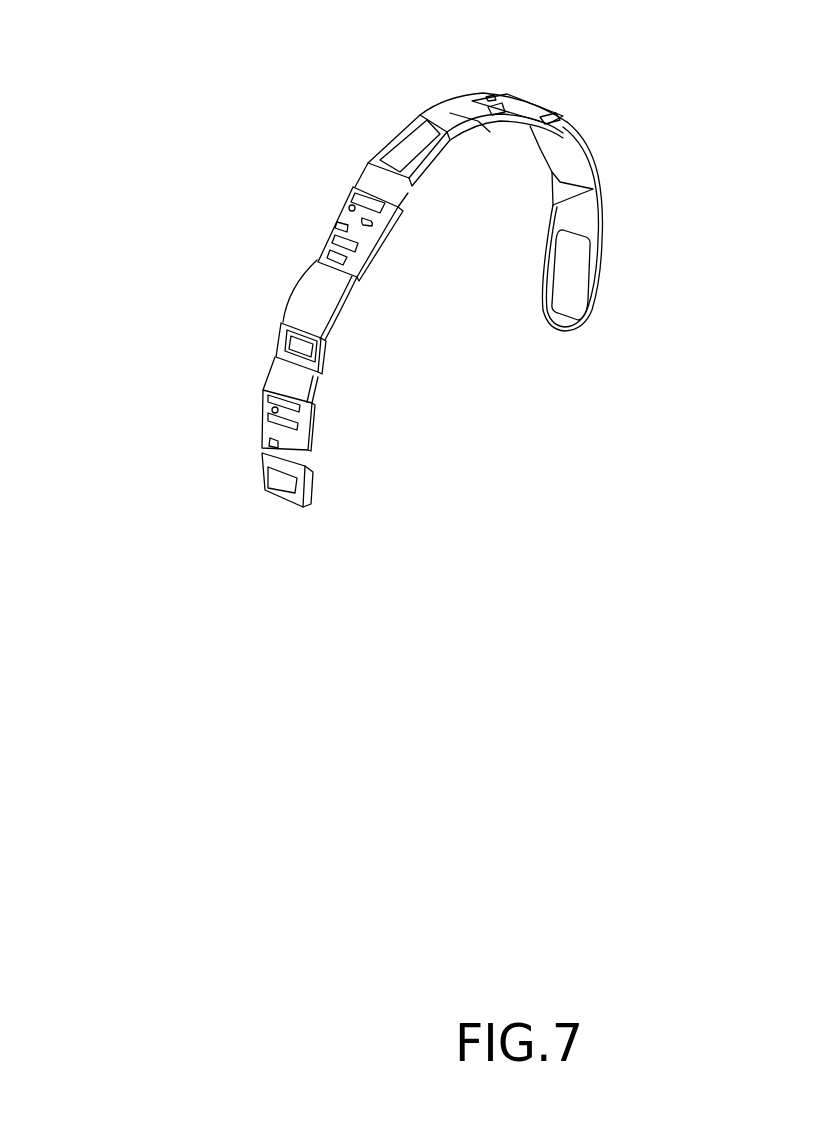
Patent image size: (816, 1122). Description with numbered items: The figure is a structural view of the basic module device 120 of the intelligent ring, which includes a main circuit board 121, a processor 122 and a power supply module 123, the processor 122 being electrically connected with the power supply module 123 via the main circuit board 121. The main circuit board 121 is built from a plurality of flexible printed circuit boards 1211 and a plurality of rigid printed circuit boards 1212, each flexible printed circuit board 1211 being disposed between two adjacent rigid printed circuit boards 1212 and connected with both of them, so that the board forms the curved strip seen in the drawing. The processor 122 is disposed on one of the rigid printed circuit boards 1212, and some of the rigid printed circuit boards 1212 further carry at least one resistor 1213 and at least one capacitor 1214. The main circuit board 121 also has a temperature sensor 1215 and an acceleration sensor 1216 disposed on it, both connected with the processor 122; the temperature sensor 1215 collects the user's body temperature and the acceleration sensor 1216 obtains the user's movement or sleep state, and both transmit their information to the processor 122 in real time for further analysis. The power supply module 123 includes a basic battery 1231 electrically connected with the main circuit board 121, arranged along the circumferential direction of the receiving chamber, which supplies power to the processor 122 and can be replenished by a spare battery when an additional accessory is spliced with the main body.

The basic module device 120 is at (425, 38).
The main circuit board 121 is at (113, 182).
The flexible printed circuit board 1211 is at (308, 307).
The rigid printed circuit board 1212 is at (325, 235).
The resistor 1213 is at (278, 442).
The capacitor 1214 is at (367, 225).
The temperature sensor 1215 is at (520, 100).
The acceleration sensor 1216 is at (285, 488).
The processor 122 is at (415, 147).
The power supply module 123 is at (587, 225).
The basic battery 1231 is at (570, 272).